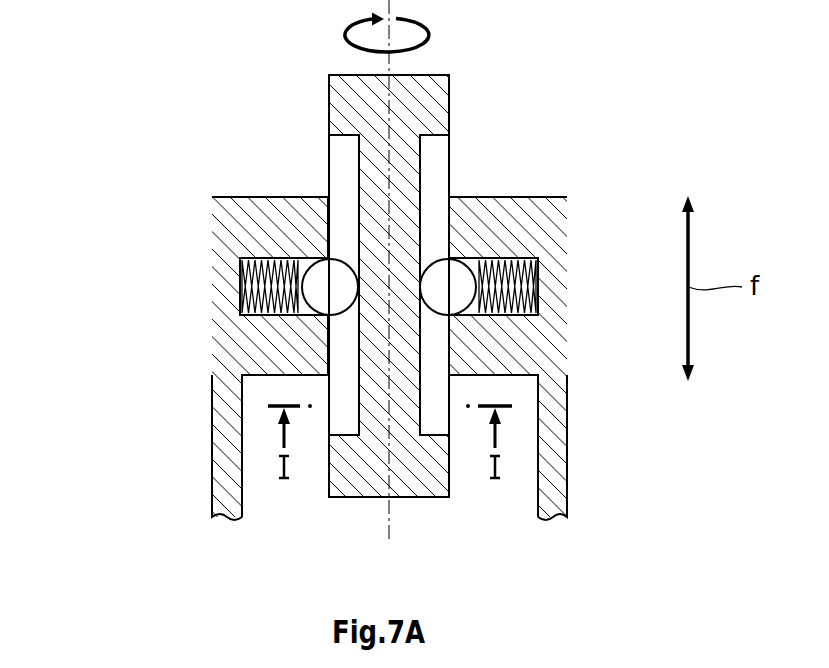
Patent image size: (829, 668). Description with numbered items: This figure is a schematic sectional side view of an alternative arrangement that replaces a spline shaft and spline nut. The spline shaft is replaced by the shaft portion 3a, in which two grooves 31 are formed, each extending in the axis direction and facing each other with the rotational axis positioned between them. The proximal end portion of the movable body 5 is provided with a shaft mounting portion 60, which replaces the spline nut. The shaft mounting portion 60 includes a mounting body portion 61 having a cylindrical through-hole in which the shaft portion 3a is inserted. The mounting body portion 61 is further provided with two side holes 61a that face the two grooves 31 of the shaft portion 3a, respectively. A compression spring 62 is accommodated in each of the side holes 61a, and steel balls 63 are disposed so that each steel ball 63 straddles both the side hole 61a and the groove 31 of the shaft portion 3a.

The shaft mounting portion 60 is at (414, 334).
The mounting body portion 61 is at (213, 277).
The side hole 61a is at (250, 256).
The compression spring 62 is at (258, 285).
The steel ball 63 is at (318, 304).
The movable body 5 is at (203, 457).
The shaft portion 3a is at (414, 334).
The groove 31 is at (340, 154).